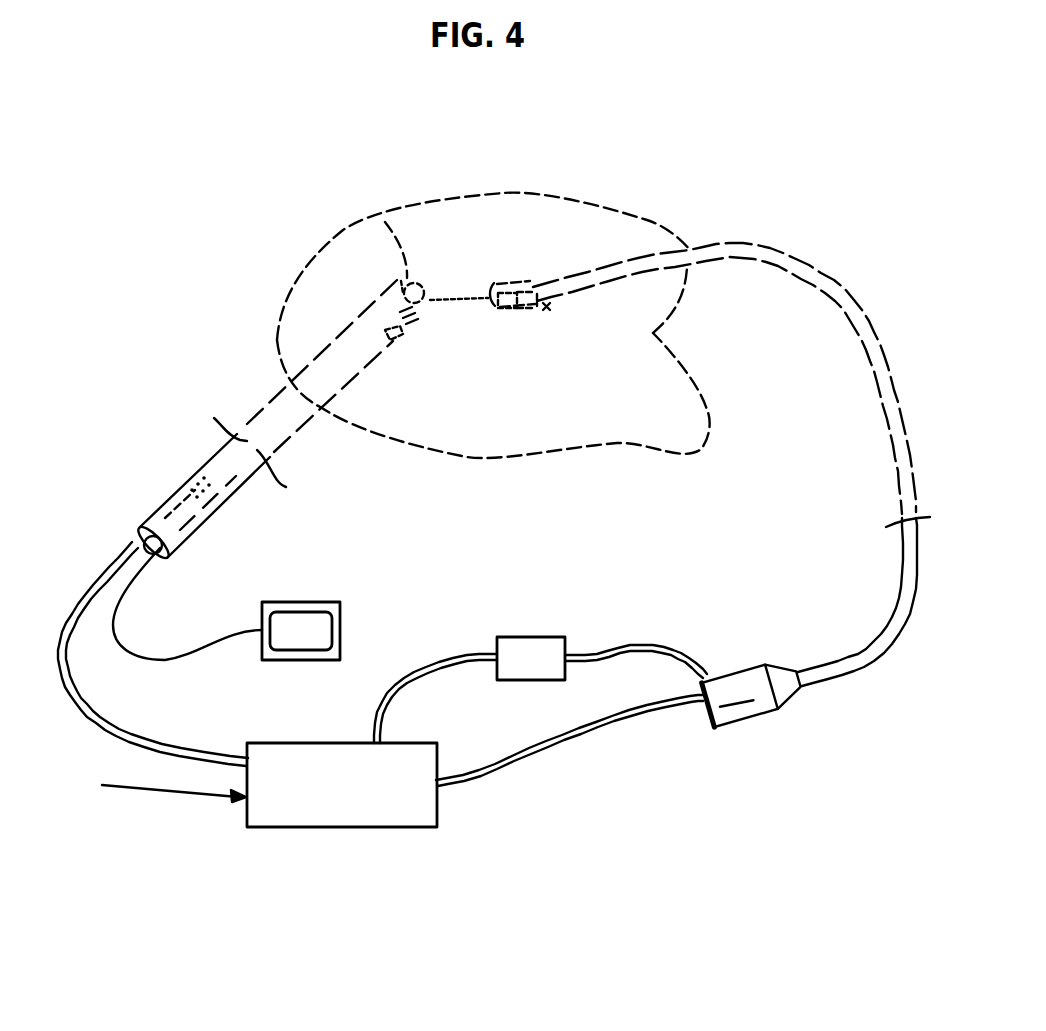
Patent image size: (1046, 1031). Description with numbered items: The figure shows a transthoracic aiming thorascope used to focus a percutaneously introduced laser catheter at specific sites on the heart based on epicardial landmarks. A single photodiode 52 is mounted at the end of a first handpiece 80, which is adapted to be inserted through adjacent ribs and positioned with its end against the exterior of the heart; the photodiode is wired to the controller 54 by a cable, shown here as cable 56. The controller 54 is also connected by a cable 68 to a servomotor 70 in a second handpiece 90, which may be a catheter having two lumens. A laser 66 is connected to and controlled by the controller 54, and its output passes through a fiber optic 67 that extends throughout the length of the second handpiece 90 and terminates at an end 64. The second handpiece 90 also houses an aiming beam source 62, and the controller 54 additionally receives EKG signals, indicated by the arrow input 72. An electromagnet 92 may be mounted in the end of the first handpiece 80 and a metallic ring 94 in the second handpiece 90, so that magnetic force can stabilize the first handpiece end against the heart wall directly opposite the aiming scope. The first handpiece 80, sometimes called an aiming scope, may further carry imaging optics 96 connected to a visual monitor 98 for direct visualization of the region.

The photodiode 52 is at (420, 289).
The controller 54 is at (343, 827).
The cable 56 is at (116, 731).
The aiming beam source 62 is at (494, 288).
The end of fiber optic 64 is at (497, 306).
The laser 66 is at (542, 636).
The fiber optic 67 is at (644, 648).
The cable 68 is at (568, 744).
The servomotor 70 is at (753, 703).
The input signal 72 is at (167, 792).
The first handpiece 80 is at (209, 462).
The second handpiece 90 is at (870, 653).
The electromagnet 92 is at (405, 340).
The metallic ring 94 is at (539, 304).
The imaging optics 96 is at (385, 222).
The visual monitor 98 is at (321, 613).